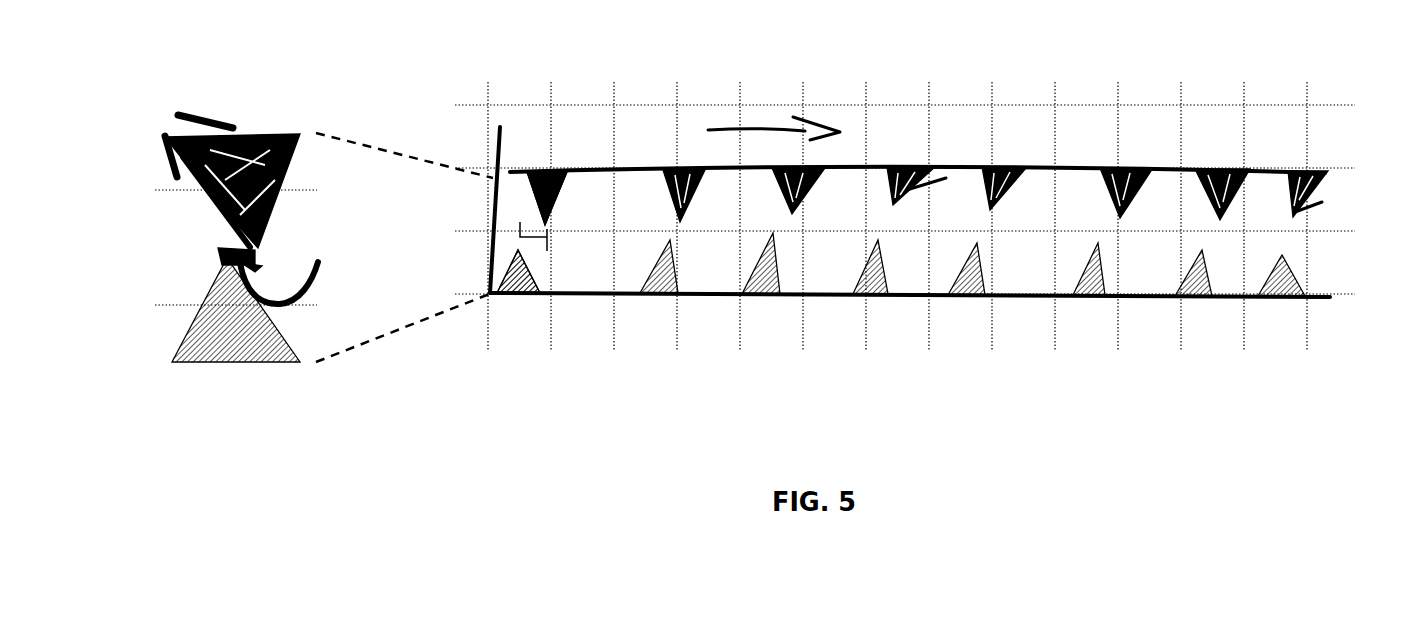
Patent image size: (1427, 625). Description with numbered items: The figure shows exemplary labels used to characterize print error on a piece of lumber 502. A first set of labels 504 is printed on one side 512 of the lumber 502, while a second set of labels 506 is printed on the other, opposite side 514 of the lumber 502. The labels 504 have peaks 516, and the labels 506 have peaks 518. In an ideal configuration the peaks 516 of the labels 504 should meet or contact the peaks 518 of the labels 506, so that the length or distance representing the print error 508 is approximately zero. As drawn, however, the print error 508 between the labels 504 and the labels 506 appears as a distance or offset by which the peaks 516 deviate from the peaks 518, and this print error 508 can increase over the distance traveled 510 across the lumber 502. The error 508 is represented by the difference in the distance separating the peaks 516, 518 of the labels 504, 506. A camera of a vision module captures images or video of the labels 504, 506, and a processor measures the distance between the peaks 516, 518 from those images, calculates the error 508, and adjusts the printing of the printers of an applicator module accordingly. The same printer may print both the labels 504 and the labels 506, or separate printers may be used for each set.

The lumber 502 is at (1000, 140).
The labels 504 is at (556, 172).
The labels 506 is at (497, 296).
The print error 508 is at (520, 222).
The distance traveled 510 is at (745, 126).
The one side 512 is at (1335, 174).
The opposite side 514 is at (1335, 236).
The peaks 516 is at (268, 243).
The peaks 518 is at (222, 250).